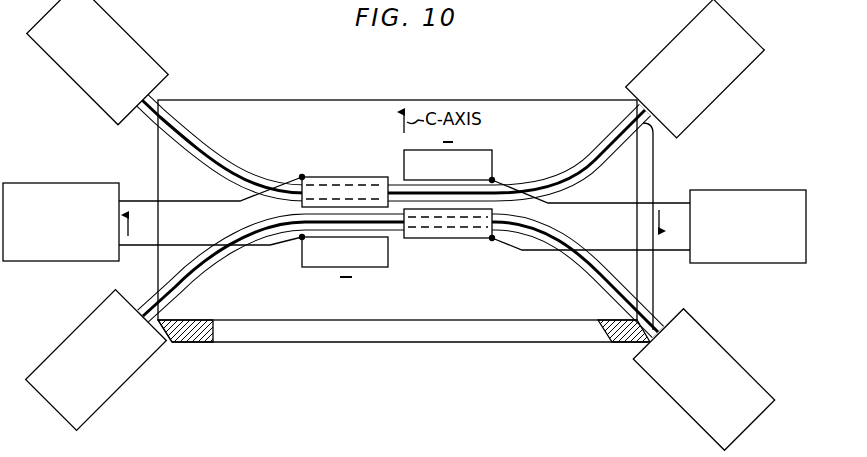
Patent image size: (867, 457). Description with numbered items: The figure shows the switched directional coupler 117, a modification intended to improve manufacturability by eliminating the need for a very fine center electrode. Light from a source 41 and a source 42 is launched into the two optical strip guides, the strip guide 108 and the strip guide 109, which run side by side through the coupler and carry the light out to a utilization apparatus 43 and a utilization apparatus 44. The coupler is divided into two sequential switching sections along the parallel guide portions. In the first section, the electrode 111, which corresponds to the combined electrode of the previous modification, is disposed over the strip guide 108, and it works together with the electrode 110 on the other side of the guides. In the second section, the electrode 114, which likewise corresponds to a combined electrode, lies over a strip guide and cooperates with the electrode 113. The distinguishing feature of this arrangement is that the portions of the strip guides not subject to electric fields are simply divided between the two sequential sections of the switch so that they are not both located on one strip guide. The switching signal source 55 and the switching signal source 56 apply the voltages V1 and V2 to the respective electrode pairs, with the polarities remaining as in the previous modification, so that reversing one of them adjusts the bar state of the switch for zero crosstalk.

The source 41 is at (70, 78).
The source 42 is at (64, 341).
The utilization apparatus 43 is at (727, 89).
The utilization apparatus 44 is at (731, 357).
The switching signal source 55 is at (63, 183).
The switching signal source 56 is at (742, 190).
The strip guide 108 is at (422, 195).
The strip guide 109 is at (427, 226).
The electrode 110 is at (311, 262).
The electrode 111 is at (313, 178).
The electrode 113 is at (492, 156).
The electrode 114 is at (485, 240).
The switched directional coupler 117 is at (370, 126).